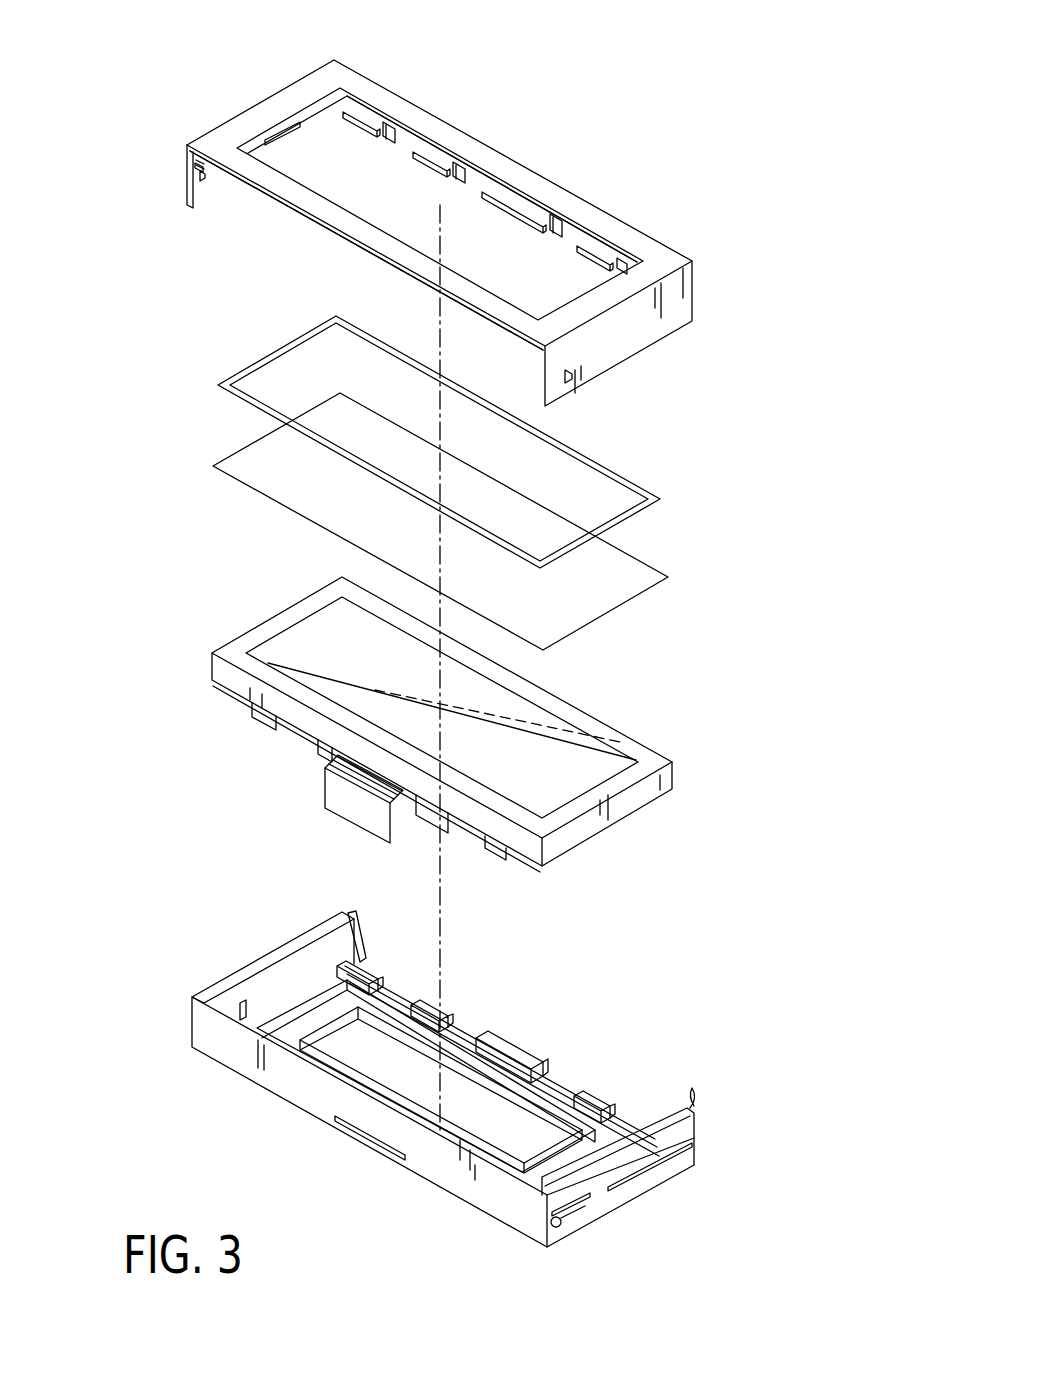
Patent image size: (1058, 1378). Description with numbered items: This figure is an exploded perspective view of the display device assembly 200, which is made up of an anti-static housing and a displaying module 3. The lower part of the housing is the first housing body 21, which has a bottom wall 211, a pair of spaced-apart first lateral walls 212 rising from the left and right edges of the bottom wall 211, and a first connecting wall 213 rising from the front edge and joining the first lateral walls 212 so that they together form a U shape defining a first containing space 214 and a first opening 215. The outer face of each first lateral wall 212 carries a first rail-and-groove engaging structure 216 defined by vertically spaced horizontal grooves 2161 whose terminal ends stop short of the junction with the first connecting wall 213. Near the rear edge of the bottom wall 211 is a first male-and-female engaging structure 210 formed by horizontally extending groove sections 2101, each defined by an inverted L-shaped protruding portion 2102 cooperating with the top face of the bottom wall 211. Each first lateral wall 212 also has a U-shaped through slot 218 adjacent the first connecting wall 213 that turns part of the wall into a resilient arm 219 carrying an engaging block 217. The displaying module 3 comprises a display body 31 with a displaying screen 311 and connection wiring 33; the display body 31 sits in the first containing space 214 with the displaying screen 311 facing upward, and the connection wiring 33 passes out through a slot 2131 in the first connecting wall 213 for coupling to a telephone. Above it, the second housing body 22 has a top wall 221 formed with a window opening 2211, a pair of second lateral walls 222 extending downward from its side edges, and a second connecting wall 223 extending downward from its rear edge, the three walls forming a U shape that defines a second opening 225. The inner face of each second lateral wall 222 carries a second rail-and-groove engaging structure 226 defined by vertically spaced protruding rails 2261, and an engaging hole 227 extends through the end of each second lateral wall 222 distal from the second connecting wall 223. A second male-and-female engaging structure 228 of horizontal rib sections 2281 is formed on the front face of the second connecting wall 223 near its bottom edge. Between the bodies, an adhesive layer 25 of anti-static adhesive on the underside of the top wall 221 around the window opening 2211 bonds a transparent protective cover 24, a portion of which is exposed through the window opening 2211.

The display device assembly 200 is at (748, 210).
The second housing body 22 is at (413, 227).
The top wall 221 is at (418, 110).
The window opening 2211 is at (322, 156).
The second lateral walls 222 is at (190, 177).
The second connecting wall 223 is at (575, 236).
The second opening 225 is at (282, 230).
The second rail-and-groove engaging structure 226 is at (190, 170).
The protruding rails 2261 is at (192, 166).
The engaging holes 227 is at (205, 181).
The second male-and-female engaging structure 228 is at (422, 165).
The rib sections 2281 is at (593, 238).
The adhesive layer 25 is at (640, 489).
The transparent protective cover 24 is at (612, 573).
The displaying module 3 is at (515, 724).
The display body 31 is at (638, 771).
The displaying screen 311 is at (556, 753).
The connection wiring 33 is at (339, 786).
The first housing body 21 is at (510, 1075).
The first male-and-female engaging structure 210 is at (494, 1000).
The groove sections 2101 is at (383, 977).
The protruding portions 2102 is at (368, 962).
The bottom wall 211 is at (455, 1052).
The first lateral walls 212 is at (258, 962).
The first connecting wall 213 is at (310, 1098).
The slot 2131 is at (375, 1140).
The first containing space 214 is at (325, 940).
The first opening 215 is at (556, 1002).
The first rail-and-groove engaging structure 216 is at (671, 1120).
The grooves 2161 is at (703, 1078).
The engaging blocks 217 is at (565, 1220).
The U-shaped through slot 218 is at (560, 1214).
The resilient arm 219 is at (590, 1190).